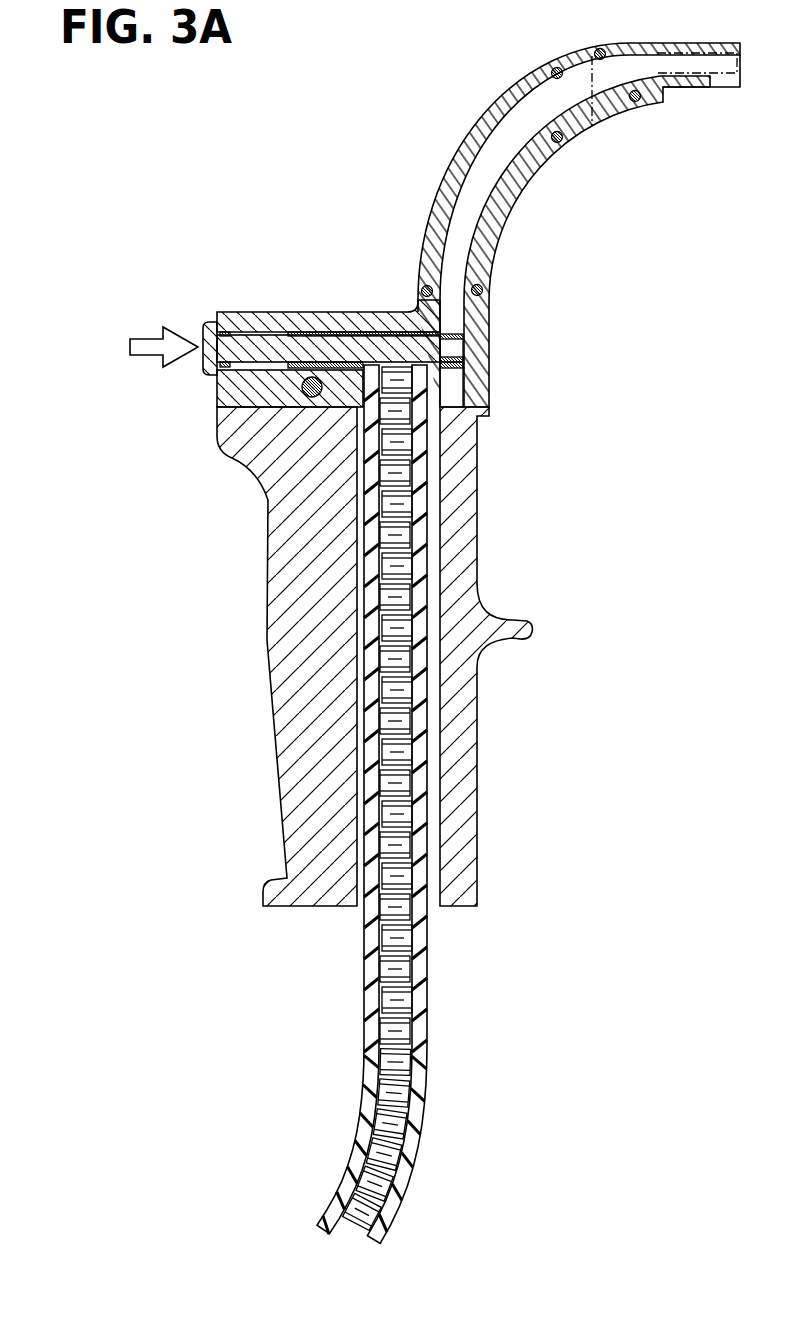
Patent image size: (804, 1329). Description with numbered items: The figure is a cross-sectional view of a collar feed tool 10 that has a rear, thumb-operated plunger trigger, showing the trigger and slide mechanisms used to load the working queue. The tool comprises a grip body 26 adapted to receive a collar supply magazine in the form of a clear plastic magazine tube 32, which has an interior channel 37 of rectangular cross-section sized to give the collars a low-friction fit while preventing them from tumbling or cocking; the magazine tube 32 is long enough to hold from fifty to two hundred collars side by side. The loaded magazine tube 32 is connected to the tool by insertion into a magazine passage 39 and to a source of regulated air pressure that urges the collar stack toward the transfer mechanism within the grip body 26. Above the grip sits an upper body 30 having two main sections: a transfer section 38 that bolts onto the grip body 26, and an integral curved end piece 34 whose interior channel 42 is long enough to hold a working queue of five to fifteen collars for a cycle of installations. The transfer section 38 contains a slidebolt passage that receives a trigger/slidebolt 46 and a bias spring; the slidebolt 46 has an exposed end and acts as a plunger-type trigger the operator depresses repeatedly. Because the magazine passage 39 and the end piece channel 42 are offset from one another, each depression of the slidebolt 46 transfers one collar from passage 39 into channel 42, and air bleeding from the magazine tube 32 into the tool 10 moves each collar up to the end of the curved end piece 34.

The collar feed tool 10 is at (530, 496).
The grip body 26 is at (267, 655).
The upper body 30 is at (214, 384).
The magazine tube 32 is at (432, 1030).
The curved end piece 34 is at (433, 197).
The interior channel 37 is at (406, 1113).
The transfer section 38 is at (300, 306).
The magazine passage 39 is at (437, 787).
The interior channel of end piece 42 is at (508, 166).
The trigger/slidebolt 46 is at (212, 323).